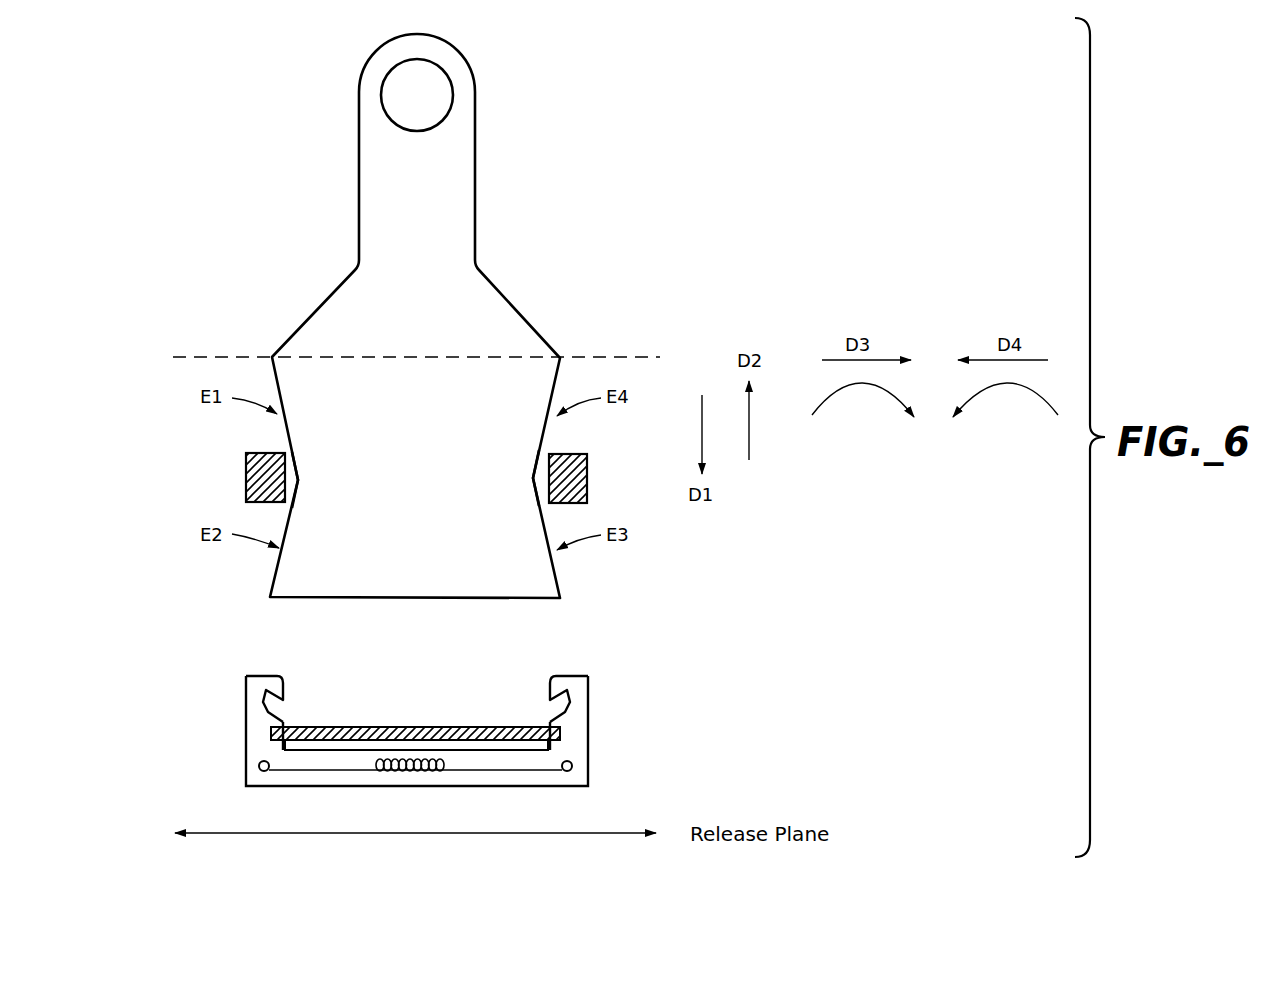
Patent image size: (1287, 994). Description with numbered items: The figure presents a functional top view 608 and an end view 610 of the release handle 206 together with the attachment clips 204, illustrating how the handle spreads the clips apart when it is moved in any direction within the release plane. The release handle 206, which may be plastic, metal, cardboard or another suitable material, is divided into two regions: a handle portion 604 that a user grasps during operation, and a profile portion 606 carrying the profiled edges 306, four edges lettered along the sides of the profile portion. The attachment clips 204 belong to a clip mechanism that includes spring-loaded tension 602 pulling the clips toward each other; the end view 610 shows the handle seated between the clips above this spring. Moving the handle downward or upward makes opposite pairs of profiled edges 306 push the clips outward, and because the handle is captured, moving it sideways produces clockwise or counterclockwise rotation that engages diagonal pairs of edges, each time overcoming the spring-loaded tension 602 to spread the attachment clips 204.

The top view 608 is at (392, 387).
The release handle 206 is at (519, 311).
The handle portion 604 is at (447, 339).
The profile portion 606 is at (438, 461).
The profiled edges 306 is at (306, 484).
The attachment clips 204 is at (245, 485).
The end view 610 is at (240, 739).
The spring-loaded tension 602 is at (420, 774).